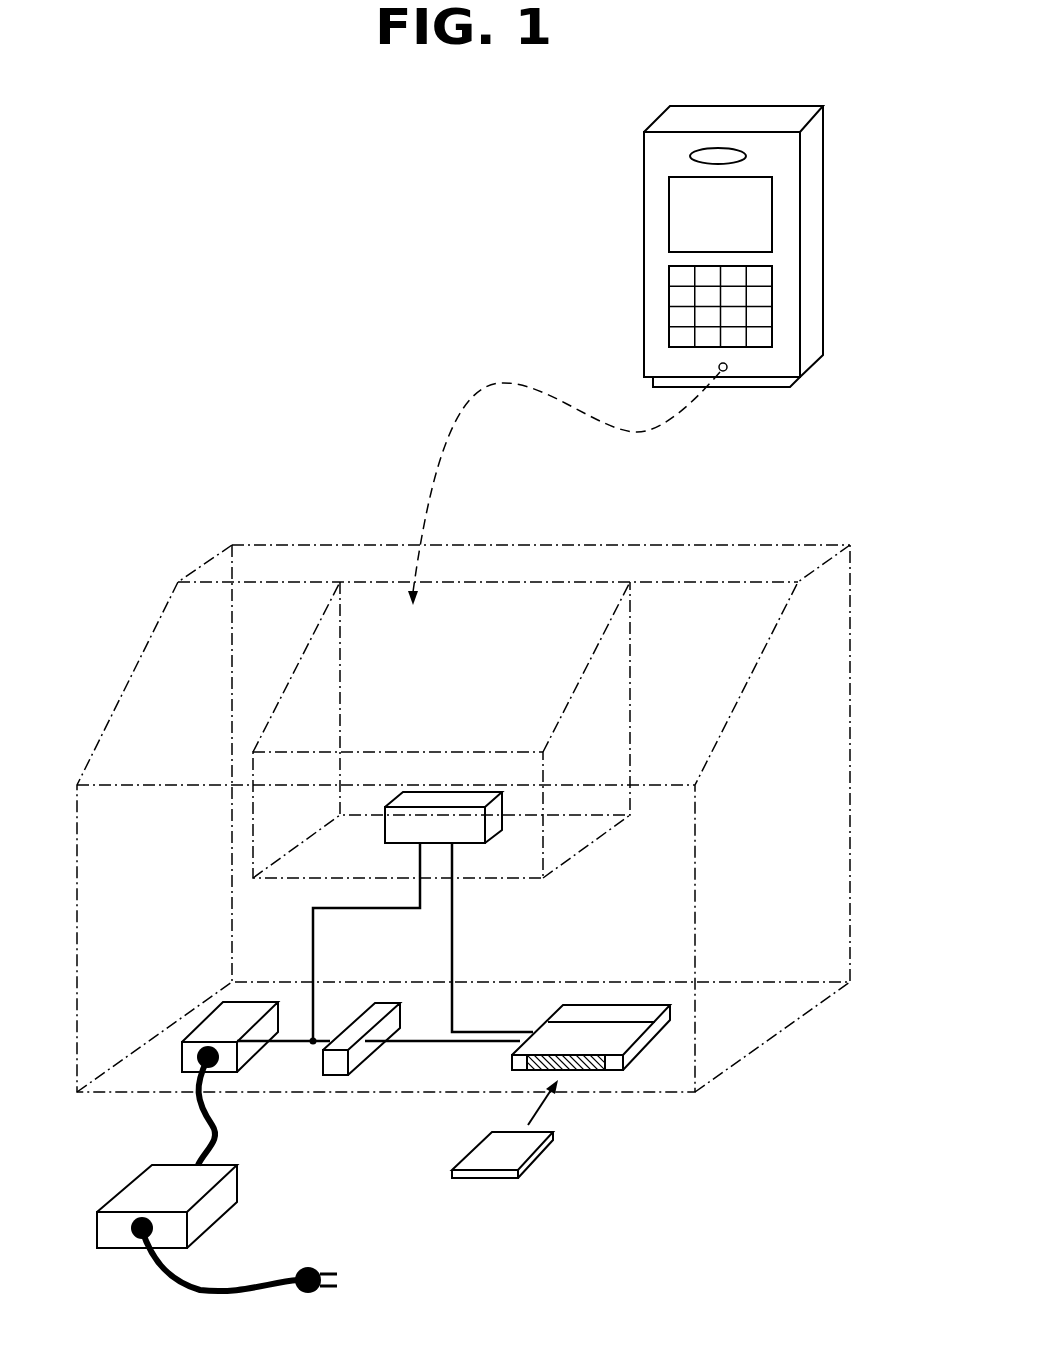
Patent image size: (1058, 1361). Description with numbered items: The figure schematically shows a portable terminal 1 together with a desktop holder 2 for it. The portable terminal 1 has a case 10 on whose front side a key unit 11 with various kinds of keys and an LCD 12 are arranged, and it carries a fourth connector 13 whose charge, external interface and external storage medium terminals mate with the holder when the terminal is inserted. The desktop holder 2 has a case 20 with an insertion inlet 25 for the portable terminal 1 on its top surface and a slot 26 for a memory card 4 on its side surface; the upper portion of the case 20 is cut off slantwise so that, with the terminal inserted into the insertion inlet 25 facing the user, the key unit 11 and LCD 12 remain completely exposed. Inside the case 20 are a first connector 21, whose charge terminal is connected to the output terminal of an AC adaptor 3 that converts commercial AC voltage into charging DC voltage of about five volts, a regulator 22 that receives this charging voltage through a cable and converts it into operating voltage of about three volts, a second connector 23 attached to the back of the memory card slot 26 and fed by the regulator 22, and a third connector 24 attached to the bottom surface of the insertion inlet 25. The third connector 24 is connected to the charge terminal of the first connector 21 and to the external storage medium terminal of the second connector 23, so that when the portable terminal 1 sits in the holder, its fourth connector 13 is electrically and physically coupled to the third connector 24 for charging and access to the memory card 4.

The portable terminal 1 is at (769, 240).
The case 10 is at (825, 139).
The key unit 11 is at (763, 302).
The LCD 12 is at (758, 230).
The fourth connector 13 is at (738, 382).
The desktop holder 2 is at (279, 498).
The case 20 is at (851, 700).
The first connector 21 is at (218, 1022).
The regulator 22 is at (338, 1076).
The second connector 23 is at (665, 1087).
The third connector 24 is at (432, 805).
The insertion inlet 25 is at (495, 607).
The slot 26 is at (608, 1070).
The AC adaptor 3 is at (115, 1233).
The memory card 4 is at (527, 1160).